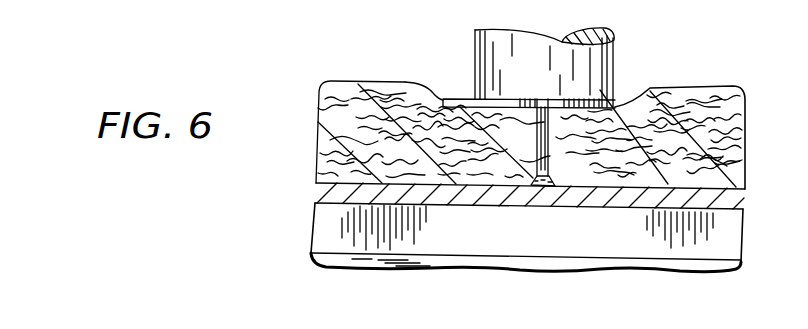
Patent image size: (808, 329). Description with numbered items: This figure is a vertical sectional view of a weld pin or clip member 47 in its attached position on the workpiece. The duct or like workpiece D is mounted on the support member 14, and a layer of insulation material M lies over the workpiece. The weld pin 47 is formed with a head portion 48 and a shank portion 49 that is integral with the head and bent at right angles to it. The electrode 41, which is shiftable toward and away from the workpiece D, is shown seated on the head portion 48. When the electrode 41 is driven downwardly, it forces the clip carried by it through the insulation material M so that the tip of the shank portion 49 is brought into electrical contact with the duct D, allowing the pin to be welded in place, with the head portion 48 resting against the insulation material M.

The electrode 41 is at (492, 58).
The weld pin 47 is at (438, 93).
The head portion 48 is at (588, 103).
The shank portion 49 is at (552, 165).
The support member 14 is at (314, 228).
The insulation material M is at (740, 128).
The workpiece D is at (742, 205).